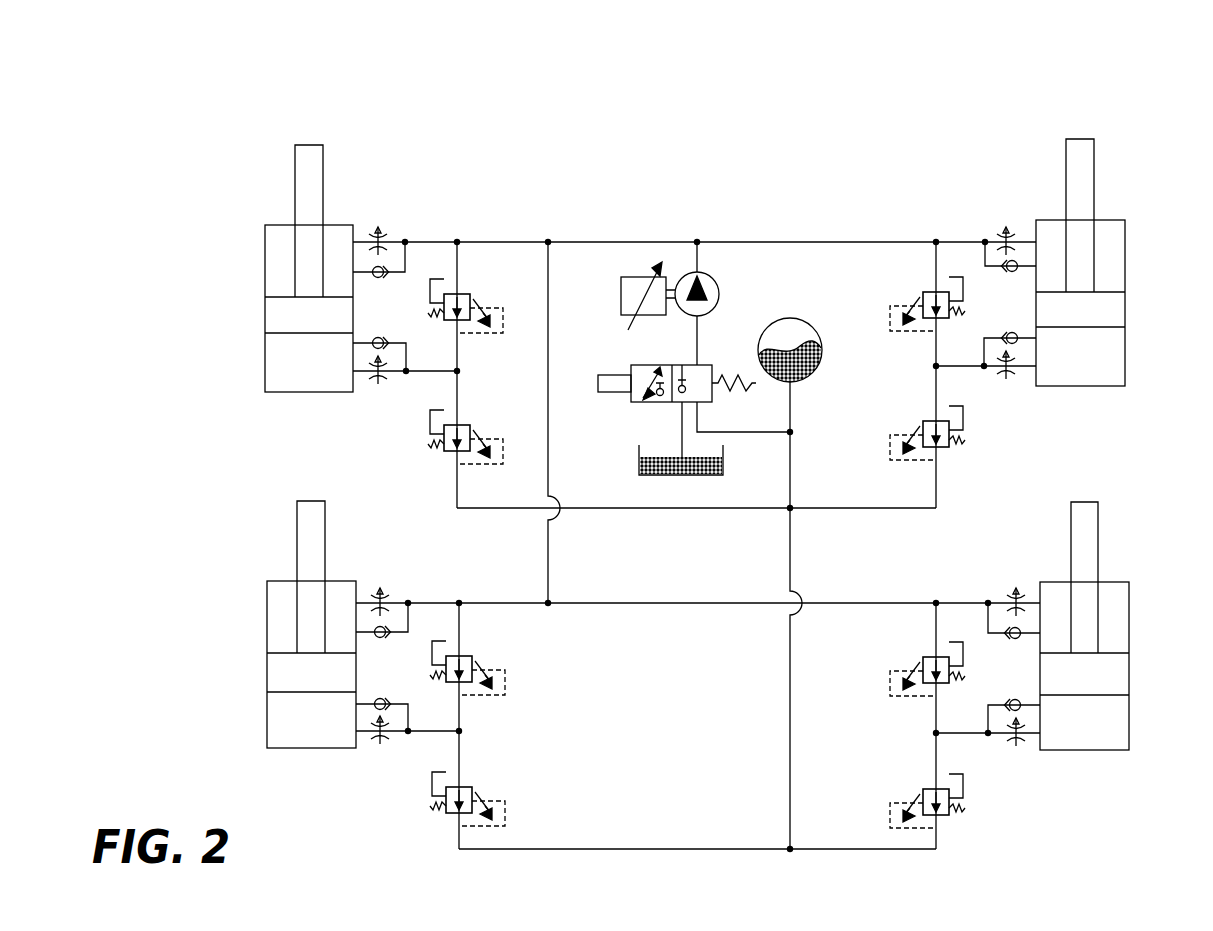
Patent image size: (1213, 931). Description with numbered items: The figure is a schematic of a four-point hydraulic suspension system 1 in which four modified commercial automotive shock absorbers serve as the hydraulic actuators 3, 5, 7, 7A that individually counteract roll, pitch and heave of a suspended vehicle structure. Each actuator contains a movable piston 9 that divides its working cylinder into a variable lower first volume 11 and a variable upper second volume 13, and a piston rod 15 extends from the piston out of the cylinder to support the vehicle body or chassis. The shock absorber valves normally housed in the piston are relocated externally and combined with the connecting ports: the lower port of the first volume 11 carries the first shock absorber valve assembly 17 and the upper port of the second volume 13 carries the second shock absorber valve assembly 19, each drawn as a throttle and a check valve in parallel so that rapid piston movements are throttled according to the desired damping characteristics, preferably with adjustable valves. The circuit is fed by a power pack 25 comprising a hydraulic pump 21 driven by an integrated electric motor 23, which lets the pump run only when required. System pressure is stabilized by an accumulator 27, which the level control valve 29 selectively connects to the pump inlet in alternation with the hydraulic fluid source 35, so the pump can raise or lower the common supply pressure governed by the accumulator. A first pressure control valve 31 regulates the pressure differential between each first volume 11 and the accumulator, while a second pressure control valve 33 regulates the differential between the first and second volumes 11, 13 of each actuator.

The hydraulic system 1 is at (758, 152).
The hydraulic actuator 3 is at (308, 392).
The hydraulic actuator 5 is at (1082, 386).
The hydraulic actuator 7 is at (312, 748).
The hydraulic actuator 7A is at (1082, 750).
The piston 9 is at (277, 314).
The first volume 11 is at (280, 368).
The second volume 13 is at (280, 270).
The piston rod 15 is at (312, 158).
The first shock absorber valve assembly 17 is at (400, 373).
The second shock absorber valve assembly 19 is at (398, 240).
The pump 21 is at (712, 288).
The electric drive motor 23 is at (630, 284).
The power pack 25 is at (688, 270).
The accumulator 27 is at (820, 338).
The level control valve 29 is at (712, 368).
The first pressure control valve 31 is at (464, 425).
The second pressure control valve 33 is at (464, 292).
The hydraulic fluid source 35 is at (682, 478).